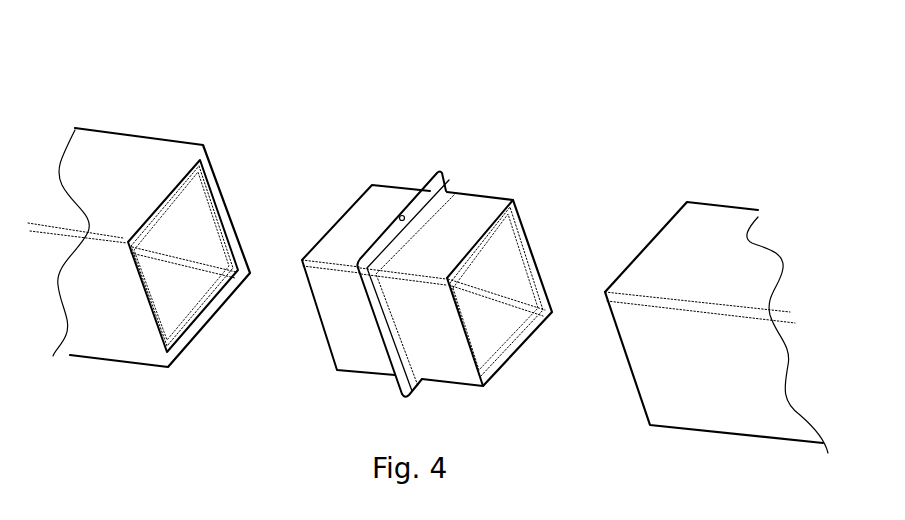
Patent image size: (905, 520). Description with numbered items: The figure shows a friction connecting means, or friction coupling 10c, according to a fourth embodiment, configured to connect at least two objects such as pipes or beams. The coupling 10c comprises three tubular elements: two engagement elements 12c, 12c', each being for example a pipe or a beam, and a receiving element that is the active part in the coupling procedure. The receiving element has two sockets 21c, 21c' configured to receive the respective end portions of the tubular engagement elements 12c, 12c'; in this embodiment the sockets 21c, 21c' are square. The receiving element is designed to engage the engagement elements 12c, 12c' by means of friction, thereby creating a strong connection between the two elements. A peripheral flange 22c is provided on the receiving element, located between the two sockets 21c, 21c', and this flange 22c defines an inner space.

The friction coupling 10c is at (288, 96).
The engagement element 12c is at (716, 291).
The engagement element 12c' is at (139, 215).
The socket 21c is at (491, 256).
The socket 21c' is at (356, 268).
The peripheral flange 22c is at (442, 172).